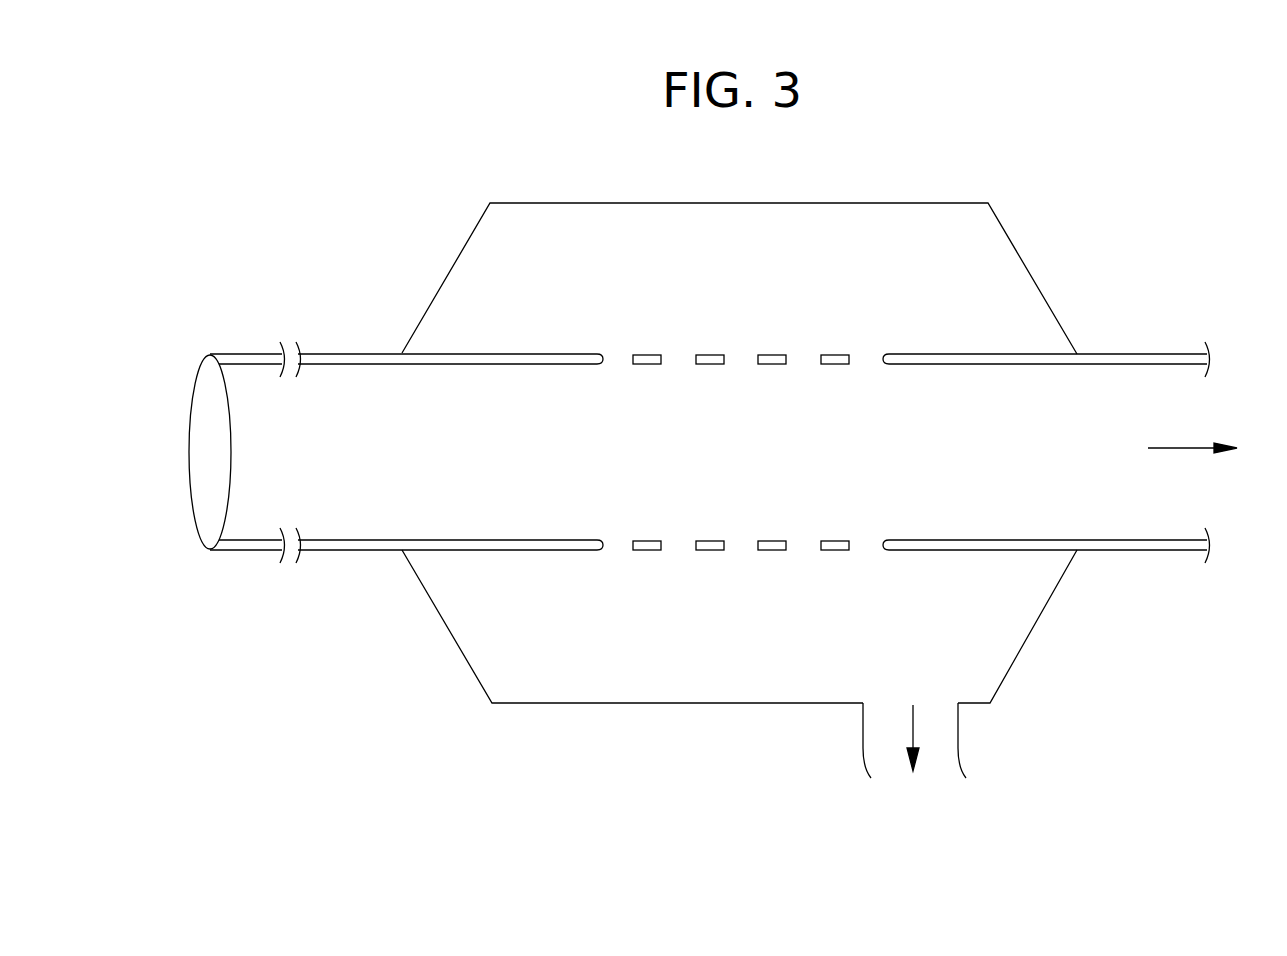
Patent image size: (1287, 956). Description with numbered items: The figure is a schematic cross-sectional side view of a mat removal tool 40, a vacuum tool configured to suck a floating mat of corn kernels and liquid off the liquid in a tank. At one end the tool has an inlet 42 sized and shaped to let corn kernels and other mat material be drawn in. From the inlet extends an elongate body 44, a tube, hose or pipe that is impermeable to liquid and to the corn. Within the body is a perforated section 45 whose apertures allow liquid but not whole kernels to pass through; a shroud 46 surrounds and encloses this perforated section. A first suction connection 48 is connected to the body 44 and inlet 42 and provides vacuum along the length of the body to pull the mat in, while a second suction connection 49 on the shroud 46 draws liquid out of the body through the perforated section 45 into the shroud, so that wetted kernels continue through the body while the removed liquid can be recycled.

The mat removal tool 40 is at (876, 165).
The inlet 42 is at (193, 385).
The elongate body 44 is at (368, 353).
The perforated section 45 is at (886, 376).
The shroud 46 is at (1018, 253).
The first suction connection 48 is at (1209, 355).
The second suction connection 49 is at (863, 755).